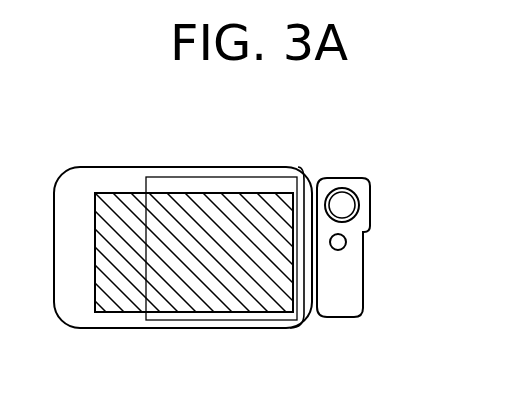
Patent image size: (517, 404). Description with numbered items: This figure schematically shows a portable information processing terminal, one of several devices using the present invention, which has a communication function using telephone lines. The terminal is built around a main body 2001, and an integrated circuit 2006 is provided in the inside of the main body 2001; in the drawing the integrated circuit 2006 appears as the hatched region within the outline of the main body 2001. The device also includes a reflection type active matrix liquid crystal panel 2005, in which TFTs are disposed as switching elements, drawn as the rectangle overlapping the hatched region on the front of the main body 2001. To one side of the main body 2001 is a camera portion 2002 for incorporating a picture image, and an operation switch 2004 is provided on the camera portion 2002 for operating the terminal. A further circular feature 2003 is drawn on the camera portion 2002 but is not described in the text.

The main body 2001 is at (113, 178).
The camera portion 2002 is at (370, 180).
The circular button/lens 2003 is at (342, 205).
The operation switch 2004 is at (338, 250).
The reflection type active matrix liquid crystal panel 2005 is at (203, 200).
The integrated circuit 2006 is at (177, 320).